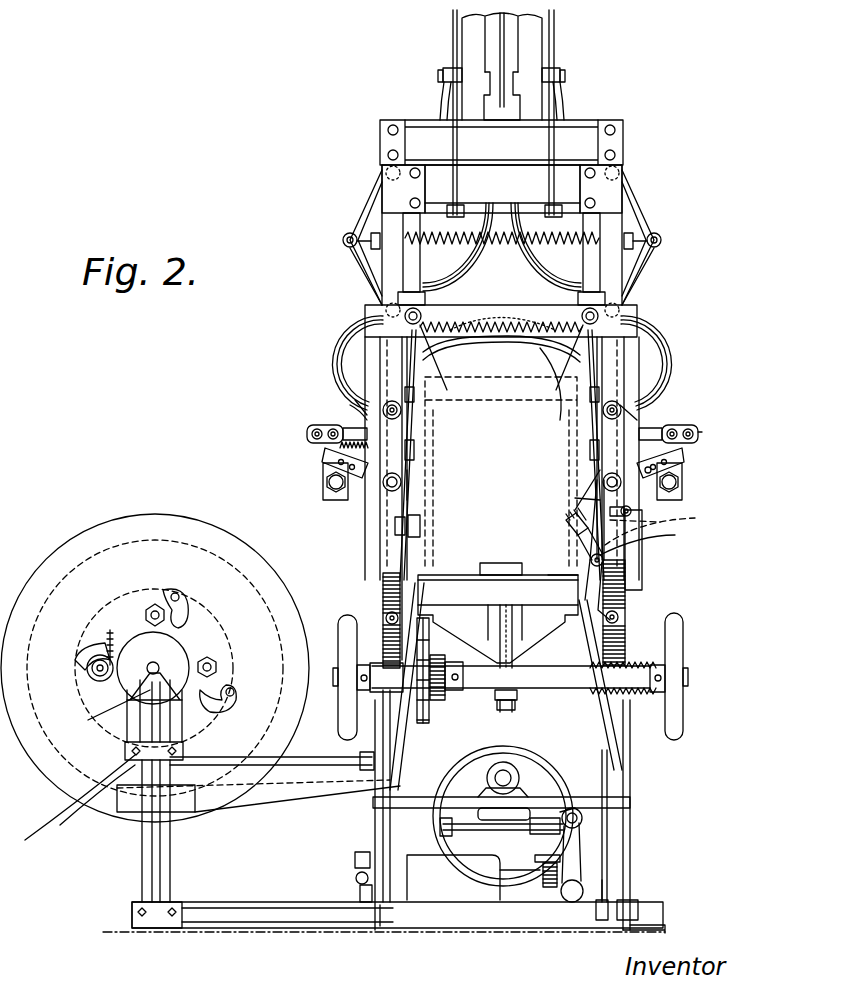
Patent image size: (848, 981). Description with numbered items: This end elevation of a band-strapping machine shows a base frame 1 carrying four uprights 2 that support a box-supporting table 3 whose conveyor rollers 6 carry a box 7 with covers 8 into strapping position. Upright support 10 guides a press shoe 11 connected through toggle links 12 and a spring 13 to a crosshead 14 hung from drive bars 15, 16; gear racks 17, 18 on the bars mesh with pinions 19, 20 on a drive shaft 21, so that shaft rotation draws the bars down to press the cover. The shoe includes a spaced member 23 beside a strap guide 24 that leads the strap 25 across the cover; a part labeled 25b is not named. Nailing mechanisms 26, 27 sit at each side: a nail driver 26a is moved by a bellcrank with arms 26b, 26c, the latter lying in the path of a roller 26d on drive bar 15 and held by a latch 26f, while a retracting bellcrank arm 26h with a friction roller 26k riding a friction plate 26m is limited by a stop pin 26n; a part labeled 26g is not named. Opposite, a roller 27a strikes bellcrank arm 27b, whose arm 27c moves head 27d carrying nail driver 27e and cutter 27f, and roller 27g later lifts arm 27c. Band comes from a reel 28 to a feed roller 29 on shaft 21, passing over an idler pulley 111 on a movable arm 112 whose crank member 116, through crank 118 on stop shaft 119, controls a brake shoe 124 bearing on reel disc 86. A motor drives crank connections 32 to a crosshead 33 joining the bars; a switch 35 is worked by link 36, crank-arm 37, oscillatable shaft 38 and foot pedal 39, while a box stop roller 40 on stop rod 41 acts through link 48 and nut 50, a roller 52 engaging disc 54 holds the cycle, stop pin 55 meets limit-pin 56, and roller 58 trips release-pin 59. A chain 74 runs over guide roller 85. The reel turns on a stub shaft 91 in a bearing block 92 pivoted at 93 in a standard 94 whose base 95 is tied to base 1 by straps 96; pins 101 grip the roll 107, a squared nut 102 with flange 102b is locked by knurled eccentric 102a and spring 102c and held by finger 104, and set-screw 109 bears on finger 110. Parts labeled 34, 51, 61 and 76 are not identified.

The base frame 1 is at (595, 912).
The uprights 2 is at (630, 832).
The box-supporting table 3 is at (450, 588).
The conveyor rollers 6 is at (548, 575).
The box 7 is at (585, 478).
The covers 8 is at (488, 410).
The upright support 10 is at (615, 762).
The press shoe 11 is at (480, 299).
The toggle links 12 is at (365, 212).
The spring 13 is at (505, 258).
The crosshead 14 is at (570, 168).
The drive bar 15 is at (630, 278).
The drive bar 16 is at (370, 262).
The gear rack 17 is at (620, 585).
The gear rack 18 is at (383, 582).
The pinion 19 is at (640, 628).
The pinion 20 is at (392, 618).
The drive shaft 21 is at (545, 672).
The spaced member 23 is at (501, 459).
The strap guide 24 is at (488, 353).
The strap 25 is at (428, 350).
The rod 25b is at (272, 761).
The nailing mechanism 26 is at (655, 415).
The nail driver 26a is at (711, 428).
The bellcrank arm 26b is at (682, 458).
The bellcrank arm 26c is at (651, 460).
The roller 26d is at (625, 400).
The latch 26f is at (682, 492).
The flexible conduit 26g is at (655, 395).
The bellcrank arm 26h is at (595, 472).
The friction roller 26k is at (642, 516).
The friction plate 26m is at (642, 560).
The stop pin 26n is at (575, 498).
The nailing mechanism 27 is at (350, 410).
The roller 27a is at (365, 395).
The bellcrank arm 27b is at (325, 455).
The bellcrank arm 27c is at (395, 522).
The head 27d is at (307, 430).
The nail driver 27e is at (362, 395).
The cutter 27f is at (323, 482).
The roller 27g is at (408, 530).
The supporting reel 28 is at (105, 513).
The feed roller 29 is at (430, 716).
The crank connections 32 is at (520, 780).
The crosshead 33 is at (560, 780).
The rod 34 is at (415, 495).
The switch 35 is at (482, 896).
The link 36 is at (478, 835).
The crank-arm 37 is at (580, 845).
The oscillatable shaft 38 is at (568, 902).
The foot pedal 39 is at (610, 885).
The box stop roller 40 is at (566, 528).
The stop rod 41 is at (585, 590).
The link 48 is at (596, 722).
The nut 50 is at (563, 869).
The link 51 is at (580, 825).
The roller 52 is at (580, 812).
The disc 54 is at (420, 745).
The stop pin 55 is at (662, 529).
The limit-pin 56 is at (648, 516).
The roller 58 is at (610, 508).
The release-pin 59 is at (649, 543).
The block 61 is at (505, 560).
The chain 74 is at (505, 712).
The pin 76 is at (512, 693).
The guide roller 85 is at (478, 625).
The disc 86 is at (180, 518).
The stub shaft 91 is at (158, 666).
The bearing block 92 is at (111, 719).
The pivot pin 93 is at (182, 720).
The supporting frame 94 is at (142, 840).
The base 95 is at (128, 920).
The straps 96 is at (222, 905).
The pin 101 is at (182, 595).
The nut 102 is at (160, 660).
The knurled eccentric 102a is at (98, 682).
The flange 102b is at (140, 640).
The spring 102c is at (115, 640).
The finger 104 is at (183, 750).
The roll of band material 107 is at (228, 678).
The set-screw 109 is at (75, 795).
The finger 110 is at (76, 799).
The idler pulley 111 is at (445, 772).
The movable arm 112 is at (410, 842).
The crank member 116 is at (368, 862).
The crank 118 is at (358, 895).
The stop shaft 119 is at (288, 905).
The brake shoe 124 is at (185, 805).